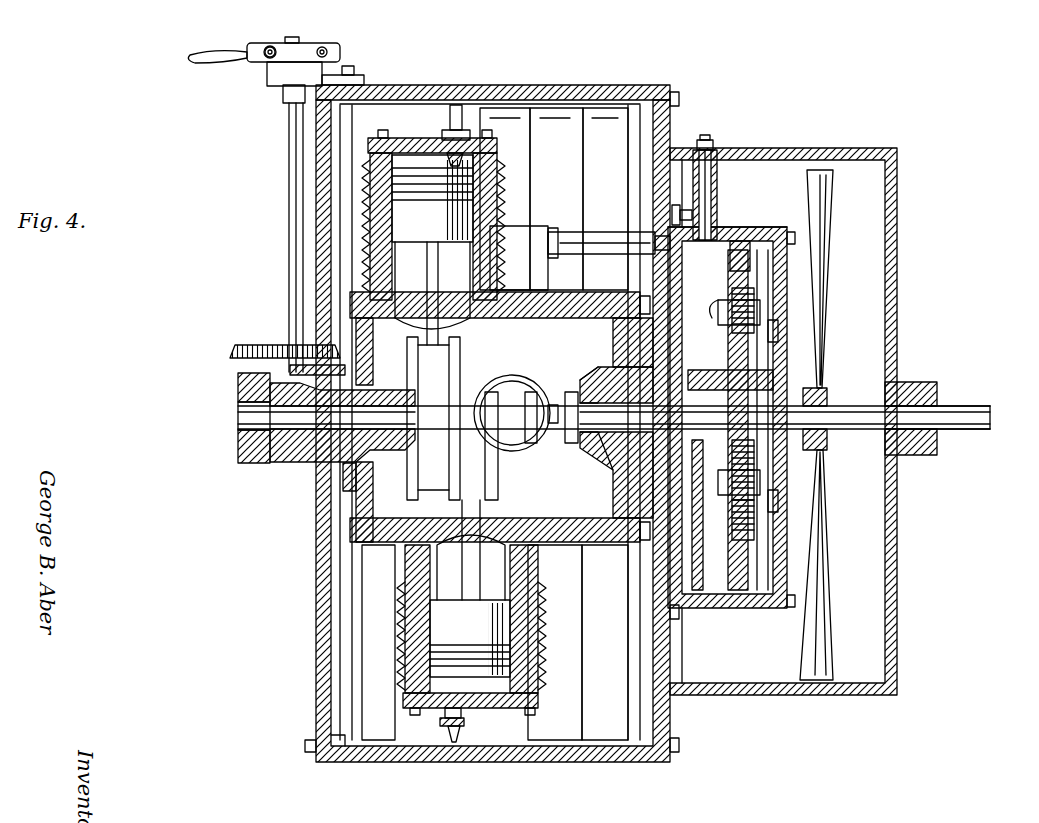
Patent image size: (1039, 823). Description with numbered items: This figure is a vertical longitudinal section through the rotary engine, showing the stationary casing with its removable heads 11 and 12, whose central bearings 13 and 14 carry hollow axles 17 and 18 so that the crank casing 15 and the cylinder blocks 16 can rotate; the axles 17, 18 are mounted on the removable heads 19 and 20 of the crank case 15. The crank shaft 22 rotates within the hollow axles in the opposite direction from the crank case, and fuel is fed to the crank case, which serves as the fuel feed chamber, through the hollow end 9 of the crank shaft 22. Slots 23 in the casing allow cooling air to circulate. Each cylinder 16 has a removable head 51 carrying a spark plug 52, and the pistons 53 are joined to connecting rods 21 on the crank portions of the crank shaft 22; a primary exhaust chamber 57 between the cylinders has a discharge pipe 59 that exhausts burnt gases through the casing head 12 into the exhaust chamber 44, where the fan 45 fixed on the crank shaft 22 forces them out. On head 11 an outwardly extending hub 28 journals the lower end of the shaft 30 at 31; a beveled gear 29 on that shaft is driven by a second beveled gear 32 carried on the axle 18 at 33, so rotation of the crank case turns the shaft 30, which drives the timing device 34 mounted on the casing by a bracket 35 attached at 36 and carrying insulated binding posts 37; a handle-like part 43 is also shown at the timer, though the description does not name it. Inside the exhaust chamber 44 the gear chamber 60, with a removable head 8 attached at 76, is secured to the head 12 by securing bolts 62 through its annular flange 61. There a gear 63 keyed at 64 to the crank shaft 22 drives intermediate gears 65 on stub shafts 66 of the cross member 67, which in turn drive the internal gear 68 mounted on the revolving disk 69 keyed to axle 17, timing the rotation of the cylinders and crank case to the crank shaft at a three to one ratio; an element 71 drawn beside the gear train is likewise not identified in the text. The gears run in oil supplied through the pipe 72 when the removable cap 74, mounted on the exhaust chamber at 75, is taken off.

The removable head 8 is at (790, 228).
The hollow end 9 is at (240, 414).
The removable head 11 is at (320, 577).
The removable head 12 is at (660, 93).
The central bearing 13 is at (628, 390).
The central bearing 14 is at (280, 465).
The crank casing 15 is at (350, 535).
The cylinder blocks 16 is at (370, 163).
The hollow axle 17 is at (595, 380).
The hollow axle 18 is at (240, 445).
The removable head 19 is at (598, 300).
The removable head 20 is at (355, 495).
The connecting rods 21 is at (430, 268).
The crank shaft 22 is at (450, 360).
The slots 23 is at (395, 108).
The hub 28 is at (240, 385).
The beveled gear 29 is at (262, 345).
The shaft 30 is at (289, 178).
The journal 31 is at (268, 368).
The second beveled gear 32 is at (343, 475).
The mounting of second beveled gear 33 is at (367, 382).
The timing device 34 is at (340, 53).
The bracket 35 is at (275, 72).
The bracket attachment 36 is at (352, 78).
The binding posts 37 is at (264, 50).
The handle 43 is at (185, 56).
The exhaust chamber 44 is at (812, 150).
The fan 45 is at (824, 175).
The removable heads 51 is at (372, 143).
The spark plugs 52 is at (455, 108).
The pistons 53 is at (510, 385).
The primary exhaust chamber 57 is at (519, 258).
The discharge pipe 59 is at (556, 240).
The gear chamber 60 is at (775, 228).
The annular flange 61 is at (678, 210).
The securing bolts 62 is at (692, 218).
The gear 63 is at (745, 455).
The key 64 is at (780, 372).
The intermediate gears 65 is at (745, 295).
The stub shafts 66 is at (740, 315).
The cross member 67 is at (772, 332).
The internal gear 68 is at (742, 245).
The revolving disk 69 is at (665, 235).
The bearing plate 71 is at (795, 365).
The pipe 72 is at (720, 158).
The removable cap 74 is at (706, 140).
The cap mounting 75 is at (712, 150).
The head attachment 76 is at (795, 600).